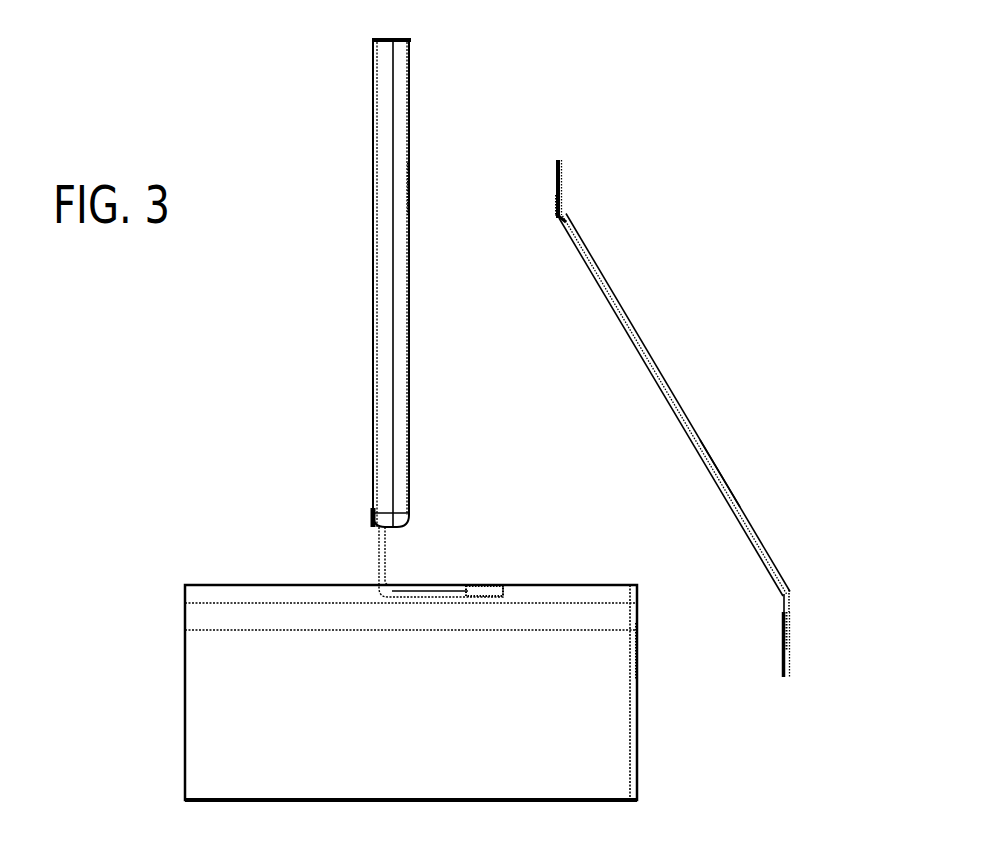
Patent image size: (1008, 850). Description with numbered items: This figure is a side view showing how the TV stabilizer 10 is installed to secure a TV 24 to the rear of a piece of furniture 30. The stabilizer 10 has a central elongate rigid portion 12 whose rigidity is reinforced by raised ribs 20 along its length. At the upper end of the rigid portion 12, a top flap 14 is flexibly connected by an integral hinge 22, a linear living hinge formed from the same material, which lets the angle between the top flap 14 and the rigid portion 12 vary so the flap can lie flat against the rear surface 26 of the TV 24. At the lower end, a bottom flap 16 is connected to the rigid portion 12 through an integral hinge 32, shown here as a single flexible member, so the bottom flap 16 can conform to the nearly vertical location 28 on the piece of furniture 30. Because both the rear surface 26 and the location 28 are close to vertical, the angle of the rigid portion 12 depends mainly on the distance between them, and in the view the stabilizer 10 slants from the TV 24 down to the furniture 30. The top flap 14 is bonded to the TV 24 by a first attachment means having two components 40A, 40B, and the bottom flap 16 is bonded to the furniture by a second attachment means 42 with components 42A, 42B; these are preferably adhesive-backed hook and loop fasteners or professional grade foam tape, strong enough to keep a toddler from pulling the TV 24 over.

The TV stabilizer 10 is at (684, 377).
The rigid portion 12 is at (647, 332).
The top flap 14 is at (568, 180).
The bottom flap 16 is at (791, 643).
The raised ribs 20 is at (727, 485).
The integral hinge 22 is at (571, 218).
The TV 24 is at (369, 63).
The rear surface 26 is at (408, 68).
The location 28 is at (637, 757).
The piece of furniture 30 is at (212, 690).
The integral hinge 32 is at (795, 595).
The first attachment means component 40A is at (556, 200).
The first attachment means component 40B is at (410, 198).
The second attachment means 42 is at (441, 562).
The second attachment means component 42A is at (640, 653).
The second attachment means component 42B is at (784, 640).